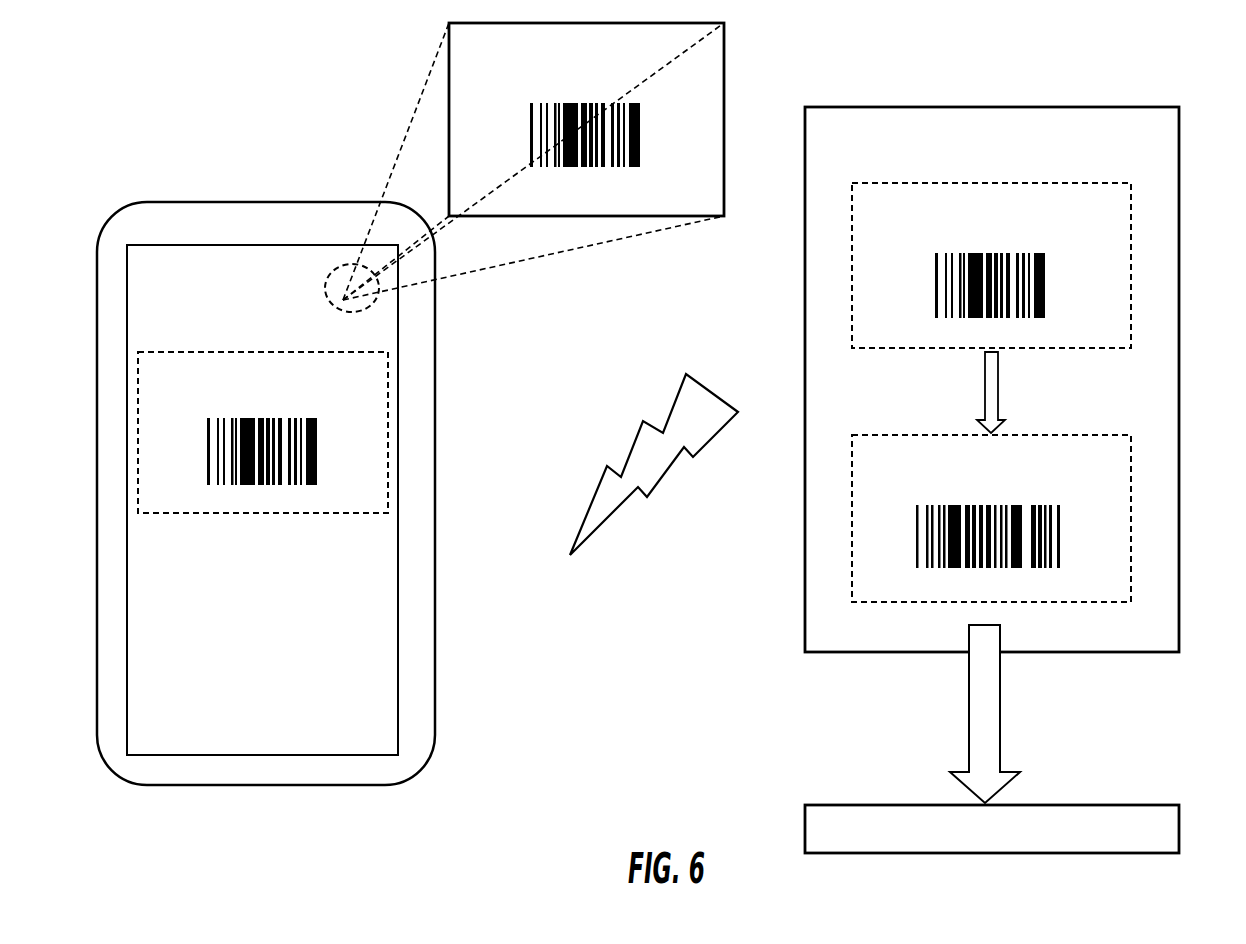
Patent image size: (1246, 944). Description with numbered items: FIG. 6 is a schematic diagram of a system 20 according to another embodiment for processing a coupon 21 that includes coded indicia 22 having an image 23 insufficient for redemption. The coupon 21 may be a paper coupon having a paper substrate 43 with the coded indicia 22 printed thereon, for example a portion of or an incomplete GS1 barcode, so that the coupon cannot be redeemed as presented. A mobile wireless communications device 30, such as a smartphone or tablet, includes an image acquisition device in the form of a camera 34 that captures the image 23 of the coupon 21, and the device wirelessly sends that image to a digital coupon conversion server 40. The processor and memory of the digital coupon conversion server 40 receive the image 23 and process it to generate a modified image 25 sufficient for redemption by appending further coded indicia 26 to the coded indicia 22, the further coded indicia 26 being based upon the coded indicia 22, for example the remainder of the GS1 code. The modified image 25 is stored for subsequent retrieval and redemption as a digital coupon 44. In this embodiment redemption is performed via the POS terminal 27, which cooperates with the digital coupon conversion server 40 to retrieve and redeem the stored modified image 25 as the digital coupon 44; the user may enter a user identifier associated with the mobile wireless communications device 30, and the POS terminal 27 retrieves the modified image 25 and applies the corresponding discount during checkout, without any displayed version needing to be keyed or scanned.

The system 20 is at (243, 106).
The coupon 21 is at (392, 356).
The coded indicia 22 is at (322, 450).
The image 23 is at (357, 498).
The modified image 25 is at (1110, 537).
The further coded indicia 26 is at (908, 540).
The POS terminal 27 is at (1083, 805).
The mobile wireless communications device 30 is at (176, 198).
The camera 34 is at (343, 300).
The digital coupon conversion server 40 is at (1005, 102).
The paper substrate 43 is at (726, 120).
The digital coupon 44 is at (845, 512).